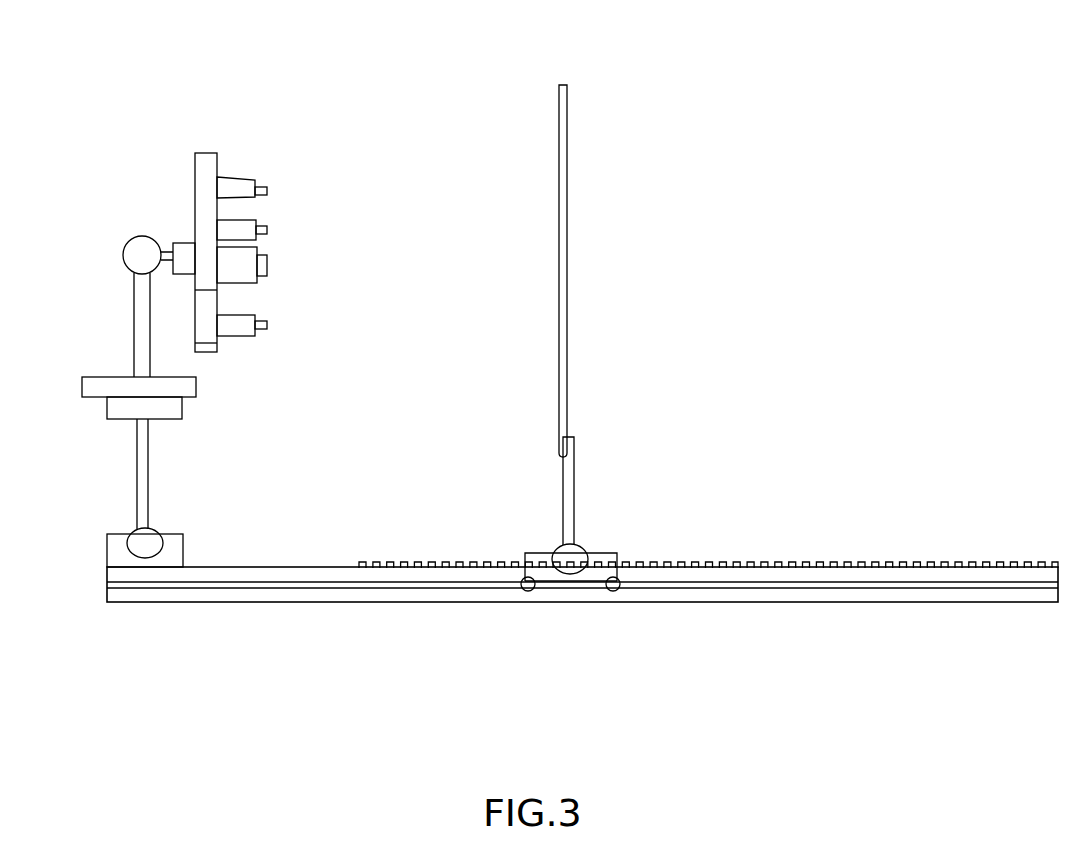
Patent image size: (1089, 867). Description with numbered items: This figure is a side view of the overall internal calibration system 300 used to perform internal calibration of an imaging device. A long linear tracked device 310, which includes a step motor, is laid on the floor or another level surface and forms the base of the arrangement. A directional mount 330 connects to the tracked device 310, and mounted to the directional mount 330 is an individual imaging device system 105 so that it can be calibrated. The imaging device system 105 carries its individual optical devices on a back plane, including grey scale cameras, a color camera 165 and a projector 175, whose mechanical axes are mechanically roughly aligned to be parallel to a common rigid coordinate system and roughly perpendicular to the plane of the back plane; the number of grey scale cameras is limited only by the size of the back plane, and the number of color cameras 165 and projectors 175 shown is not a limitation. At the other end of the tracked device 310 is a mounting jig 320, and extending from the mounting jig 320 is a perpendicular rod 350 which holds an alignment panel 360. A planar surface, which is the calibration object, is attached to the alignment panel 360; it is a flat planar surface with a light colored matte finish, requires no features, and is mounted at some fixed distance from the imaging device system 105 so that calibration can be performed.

The internal calibration system 300 is at (748, 87).
The imaging device system 105 is at (95, 433).
The color camera 165 is at (247, 220).
The projector 175 is at (245, 285).
The tracked device 310 is at (760, 603).
The mounting jig 320 is at (523, 575).
The directional mount 330 is at (184, 550).
The perpendicular rod 350 is at (575, 492).
The alignment panel 360 is at (565, 315).